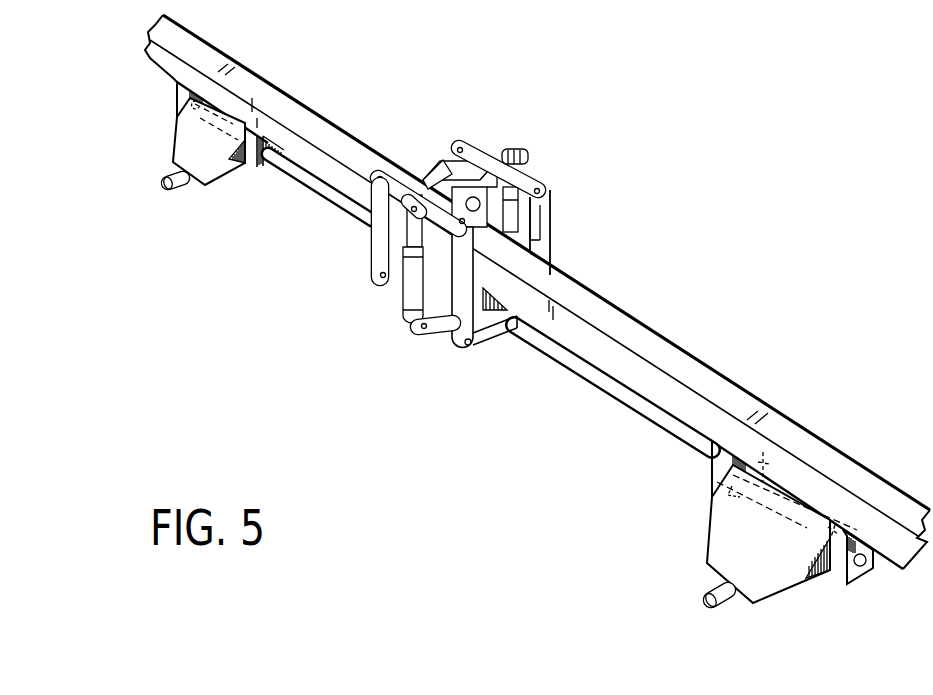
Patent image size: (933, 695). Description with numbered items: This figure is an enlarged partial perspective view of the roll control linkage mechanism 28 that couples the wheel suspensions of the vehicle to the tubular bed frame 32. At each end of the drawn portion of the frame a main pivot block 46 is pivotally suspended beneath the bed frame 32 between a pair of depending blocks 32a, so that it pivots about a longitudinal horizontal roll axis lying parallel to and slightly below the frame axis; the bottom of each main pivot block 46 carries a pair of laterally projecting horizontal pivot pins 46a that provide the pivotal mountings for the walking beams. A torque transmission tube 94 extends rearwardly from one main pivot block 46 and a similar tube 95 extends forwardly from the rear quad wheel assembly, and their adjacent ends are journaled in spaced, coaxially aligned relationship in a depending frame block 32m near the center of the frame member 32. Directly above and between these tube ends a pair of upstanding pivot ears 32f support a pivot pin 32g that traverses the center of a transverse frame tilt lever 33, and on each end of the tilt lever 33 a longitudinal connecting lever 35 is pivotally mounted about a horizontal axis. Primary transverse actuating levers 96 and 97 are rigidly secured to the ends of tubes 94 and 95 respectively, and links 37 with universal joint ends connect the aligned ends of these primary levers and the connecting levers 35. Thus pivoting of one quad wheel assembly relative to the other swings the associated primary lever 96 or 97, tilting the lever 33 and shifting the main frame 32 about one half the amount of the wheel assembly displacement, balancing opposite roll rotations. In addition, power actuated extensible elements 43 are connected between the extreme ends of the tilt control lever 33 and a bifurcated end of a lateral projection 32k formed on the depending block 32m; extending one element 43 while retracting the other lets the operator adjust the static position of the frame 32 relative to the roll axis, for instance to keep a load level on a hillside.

The roll control linkage mechanism 28 is at (575, 158).
The tubular bed frame 32 is at (725, 388).
The depending blocks 32a is at (186, 101).
The upstanding pivot ears 32f is at (463, 180).
The pivot pin 32g is at (426, 172).
The lateral projection 32k is at (440, 330).
The depending frame block 32m is at (442, 285).
The transverse frame tilt lever 33 is at (490, 185).
The longitudinal connecting lever 35 is at (387, 165).
The links 37 is at (373, 238).
The power actuated extensible elements 43 is at (410, 300).
The main pivot block 46 is at (203, 157).
The horizontal pivot pins 46a is at (166, 188).
The torque transmission tube 94 is at (600, 388).
The torque tube 95 is at (308, 187).
The primary transverse actuating lever 96 is at (500, 332).
The primary transverse actuating lever 97 is at (383, 285).